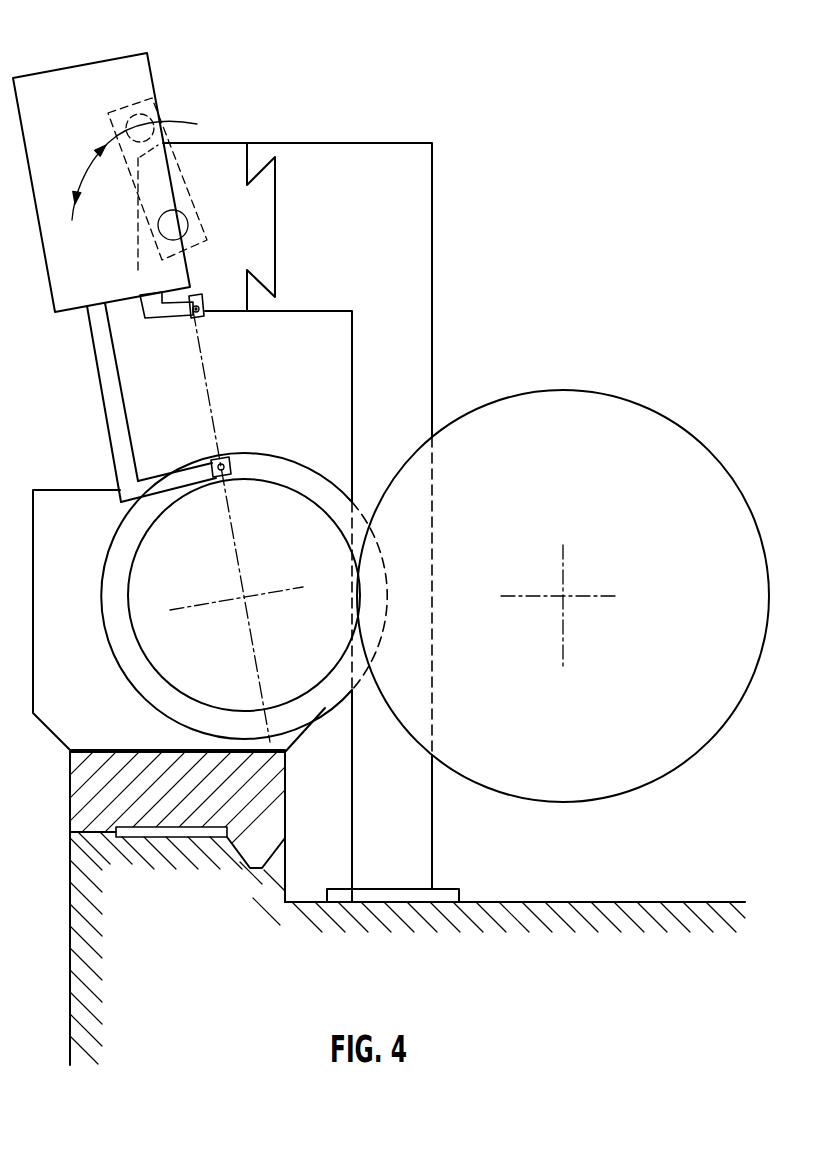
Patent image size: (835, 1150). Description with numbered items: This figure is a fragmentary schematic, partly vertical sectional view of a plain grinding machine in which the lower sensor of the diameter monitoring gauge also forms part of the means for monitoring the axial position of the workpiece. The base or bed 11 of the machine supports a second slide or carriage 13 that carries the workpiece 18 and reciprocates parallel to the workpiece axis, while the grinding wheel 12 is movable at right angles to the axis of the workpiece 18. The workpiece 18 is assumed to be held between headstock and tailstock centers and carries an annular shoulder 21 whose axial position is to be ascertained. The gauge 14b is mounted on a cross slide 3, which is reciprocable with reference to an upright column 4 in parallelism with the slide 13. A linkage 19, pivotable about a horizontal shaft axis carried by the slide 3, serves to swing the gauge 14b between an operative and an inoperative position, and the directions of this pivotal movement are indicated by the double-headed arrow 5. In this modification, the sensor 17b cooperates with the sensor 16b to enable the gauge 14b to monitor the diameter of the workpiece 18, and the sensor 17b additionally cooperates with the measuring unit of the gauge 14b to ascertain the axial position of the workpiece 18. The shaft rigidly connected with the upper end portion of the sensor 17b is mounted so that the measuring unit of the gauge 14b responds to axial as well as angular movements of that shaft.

The cross slide 3 is at (228, 168).
The upright column 4 is at (415, 261).
The double-headed arrow 5 is at (87, 173).
The base or bed 11 is at (82, 887).
The grinding wheel 12 is at (596, 404).
The second slide or carriage 13 is at (85, 805).
The gauge 14b is at (138, 75).
The sensor 16b is at (160, 313).
The sensor 17b is at (125, 447).
The workpiece 18 is at (145, 590).
The linkage 19 is at (183, 200).
The annular shoulder 21 is at (120, 542).